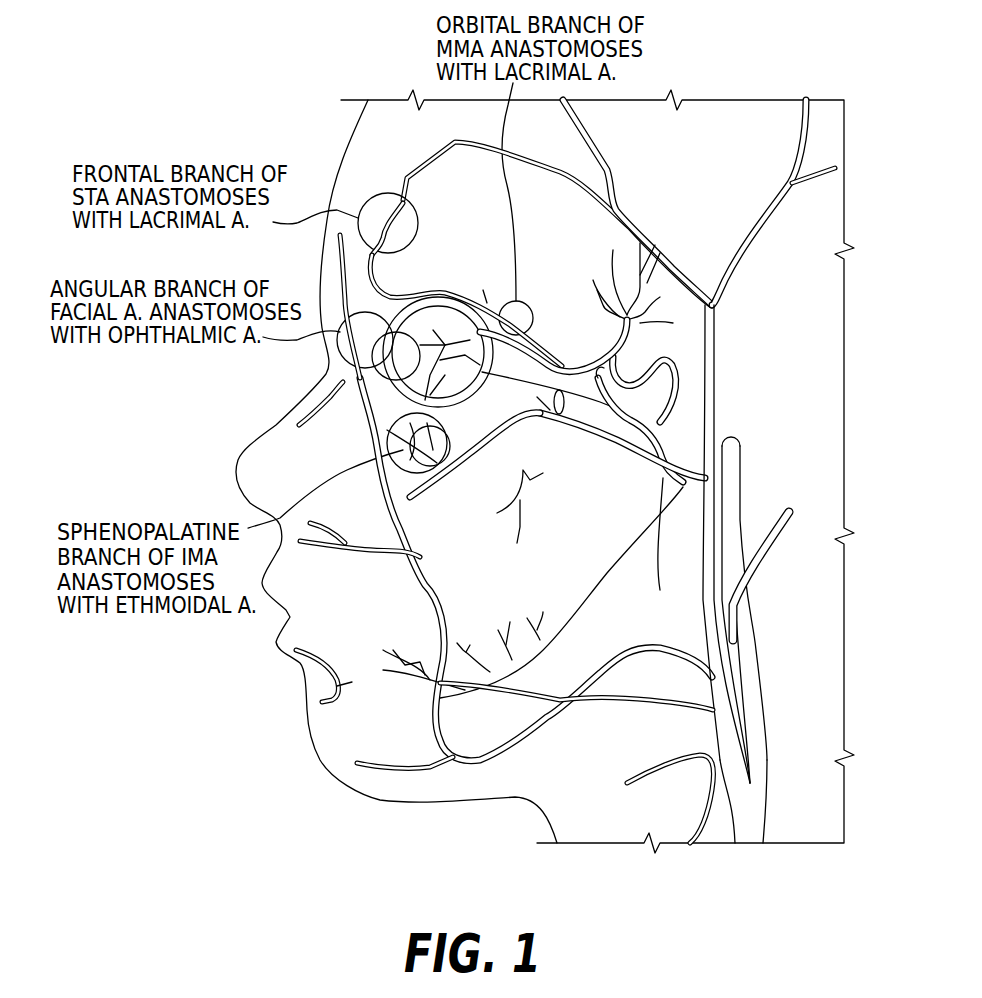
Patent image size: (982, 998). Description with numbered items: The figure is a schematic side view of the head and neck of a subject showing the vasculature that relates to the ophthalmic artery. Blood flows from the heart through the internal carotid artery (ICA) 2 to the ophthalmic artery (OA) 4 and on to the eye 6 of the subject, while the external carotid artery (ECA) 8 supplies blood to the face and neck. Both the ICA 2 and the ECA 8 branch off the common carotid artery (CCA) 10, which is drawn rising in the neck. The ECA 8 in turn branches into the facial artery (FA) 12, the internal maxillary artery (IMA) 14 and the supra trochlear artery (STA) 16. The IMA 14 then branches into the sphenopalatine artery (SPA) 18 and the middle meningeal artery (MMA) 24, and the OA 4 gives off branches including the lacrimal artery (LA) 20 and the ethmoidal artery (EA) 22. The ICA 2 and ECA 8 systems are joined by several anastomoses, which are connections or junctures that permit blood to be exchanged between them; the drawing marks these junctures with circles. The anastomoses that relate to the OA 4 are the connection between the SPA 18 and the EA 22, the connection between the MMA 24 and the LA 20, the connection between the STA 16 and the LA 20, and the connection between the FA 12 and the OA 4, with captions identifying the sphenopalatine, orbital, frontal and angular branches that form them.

The internal carotid artery (ICA) 2 is at (755, 630).
The ophthalmic artery (OA) 4 is at (570, 350).
The eye 6 is at (474, 390).
The external carotid artery (ECA) 8 is at (713, 731).
The common carotid artery (CCA) 10 is at (767, 824).
The facial artery (FA) 12 is at (647, 647).
The internal maxillary artery (IMA) 14 is at (643, 462).
The supra trochlear artery (STA) 16 is at (620, 218).
The sphenopalatine artery (SPA) 18 is at (516, 417).
The lacrimal artery (LA) 20 is at (460, 294).
The ethmoidal artery (EA) 22 is at (384, 442).
The middle meningeal artery (MMA) 24 is at (590, 433).